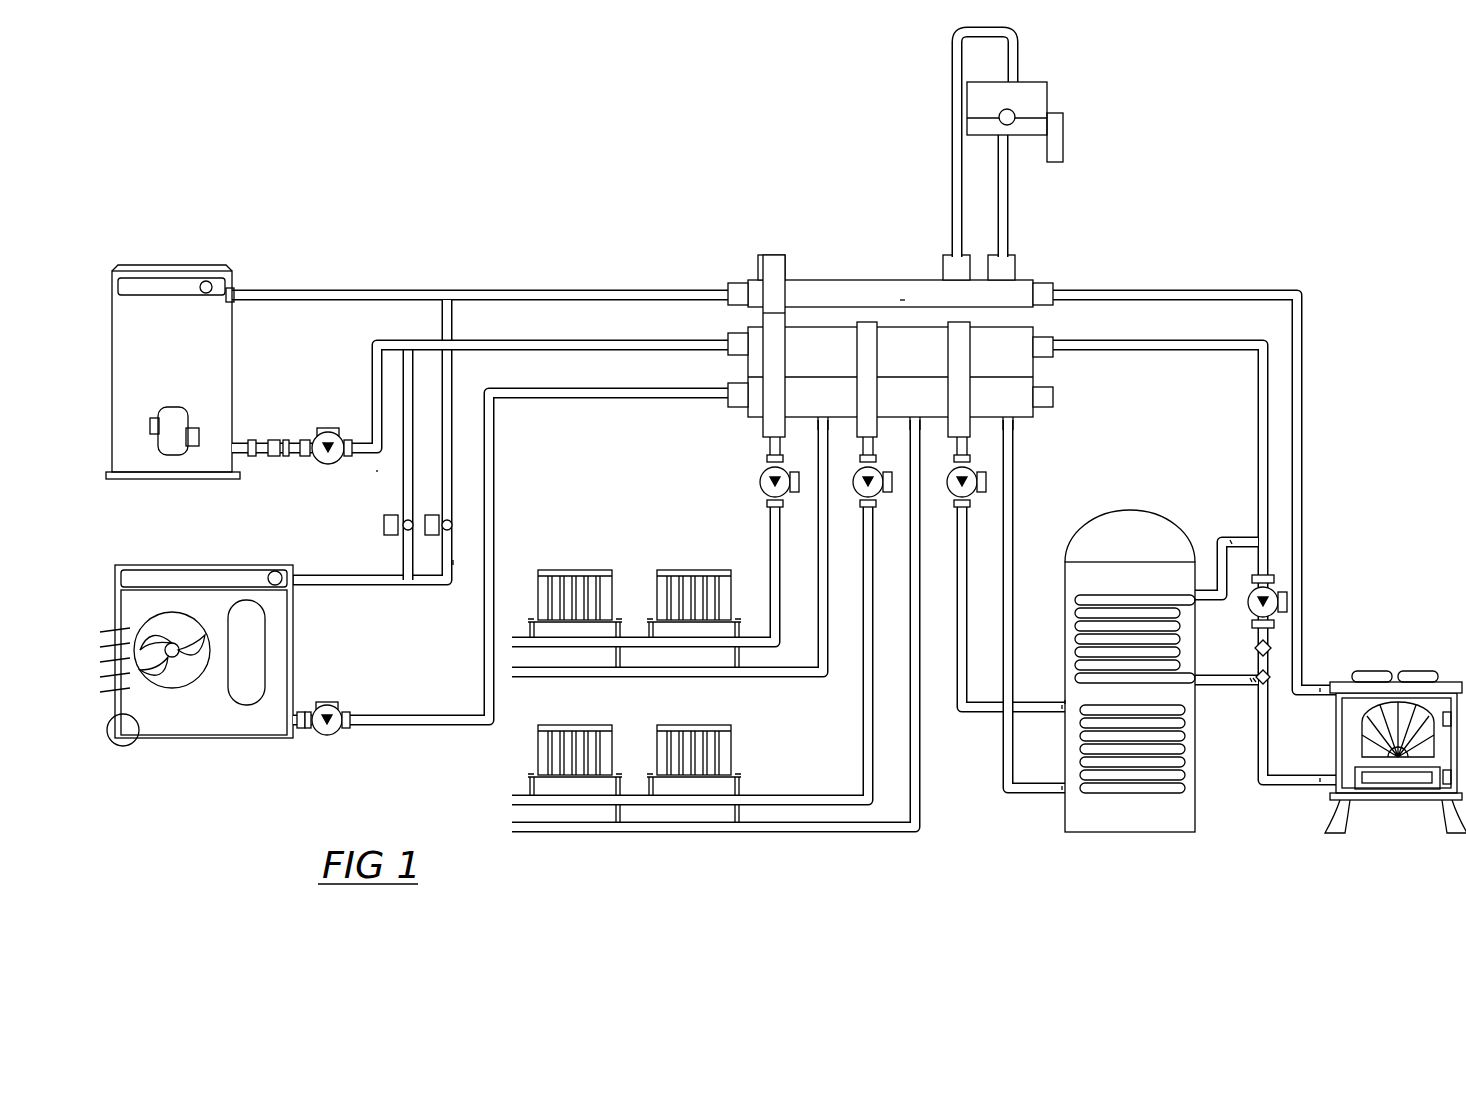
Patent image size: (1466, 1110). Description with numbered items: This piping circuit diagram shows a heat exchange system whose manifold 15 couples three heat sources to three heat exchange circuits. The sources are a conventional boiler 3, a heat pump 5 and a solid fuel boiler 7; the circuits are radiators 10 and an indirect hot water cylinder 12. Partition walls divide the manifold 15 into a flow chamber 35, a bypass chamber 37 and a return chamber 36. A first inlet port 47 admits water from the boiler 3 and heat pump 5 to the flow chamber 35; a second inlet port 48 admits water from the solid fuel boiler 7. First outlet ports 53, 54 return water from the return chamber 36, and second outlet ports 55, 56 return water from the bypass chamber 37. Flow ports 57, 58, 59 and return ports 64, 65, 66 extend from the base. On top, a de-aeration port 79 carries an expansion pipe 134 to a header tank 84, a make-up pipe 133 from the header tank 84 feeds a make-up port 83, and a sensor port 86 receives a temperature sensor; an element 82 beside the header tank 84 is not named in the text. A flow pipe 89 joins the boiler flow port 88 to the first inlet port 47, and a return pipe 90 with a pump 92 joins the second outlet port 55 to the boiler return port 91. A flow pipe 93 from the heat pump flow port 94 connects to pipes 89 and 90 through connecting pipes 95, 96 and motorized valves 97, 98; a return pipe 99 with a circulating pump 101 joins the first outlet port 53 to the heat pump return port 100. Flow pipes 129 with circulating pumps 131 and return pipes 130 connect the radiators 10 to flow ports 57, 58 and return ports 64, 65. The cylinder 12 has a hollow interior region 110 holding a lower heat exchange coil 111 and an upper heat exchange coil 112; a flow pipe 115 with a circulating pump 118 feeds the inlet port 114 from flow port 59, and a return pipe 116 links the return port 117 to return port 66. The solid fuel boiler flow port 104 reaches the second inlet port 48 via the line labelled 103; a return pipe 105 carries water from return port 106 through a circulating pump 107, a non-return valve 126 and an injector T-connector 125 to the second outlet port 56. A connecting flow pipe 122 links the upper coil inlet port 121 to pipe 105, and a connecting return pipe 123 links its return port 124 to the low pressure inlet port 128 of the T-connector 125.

The oil boiler 3 is at (188, 265).
The heat pump 5 is at (170, 565).
The wood stove 7 is at (1380, 672).
The radiator 10 is at (572, 574).
The hot water storage tank 12 is at (1120, 826).
The manifold 15 is at (845, 280).
The upper manifold body 35 is at (878, 282).
The lower manifold chamber 36 is at (832, 406).
The upper manifold chamber 37 is at (832, 364).
The left manifold port 47 is at (735, 280).
The right manifold port 48 is at (1050, 282).
The lower left port 53 is at (740, 400).
The lower right port 54 is at (1050, 400).
The middle left port 55 is at (726, 336).
The middle right port 56 is at (1050, 350).
The first valve 57 is at (762, 432).
The second valve 58 is at (860, 435).
The third valve 59 is at (962, 435).
The first outlet 64 is at (812, 420).
The second outlet 65 is at (905, 422).
The third outlet 66 is at (1016, 424).
The top port 79 is at (950, 255).
The expansion tank 82 is at (1015, 116).
The top port 83 is at (1005, 260).
The float switch 84 is at (1042, 137).
The top port 86 is at (770, 255).
The boiler outlet 88 is at (236, 286).
The boiler supply pipe 89 is at (340, 292).
The boiler return pipe 90 is at (560, 342).
The boiler inlet fitting 91 is at (240, 440).
The boiler pump 92 is at (328, 466).
The heat pump pipe 93 is at (400, 582).
The heat pump outlet 94 is at (296, 586).
The bypass pipe 95 is at (455, 380).
The pipe 96 is at (398, 452).
The pipe junction 97 is at (456, 522).
The check valve 98 is at (384, 528).
The heat pump return pipe 99 is at (483, 650).
The heat pump inlet 100 is at (300, 735).
The heat pump pump 101 is at (338, 728).
The stove supply pipe 103 is at (1135, 290).
The stove inlet 104 is at (1322, 688).
The stove return pipe 105 is at (1140, 350).
The stove outlet 106 is at (1330, 776).
The stove pump 107 is at (1272, 595).
The tank wall 110 is at (1085, 835).
The lower heat exchanger coil 111 is at (1148, 790).
The upper heat exchanger coil 112 is at (1118, 598).
The coil inlet 114 is at (1068, 698).
The tank supply pipe 115 is at (970, 716).
The tank return pipe 116 is at (1001, 792).
The coil outlet 117 is at (1062, 794).
The tank pump 118 is at (952, 492).
The coil pipe 121 is at (1212, 585).
The pipe bend 122 is at (1232, 538).
The coil return pipe 123 is at (1228, 688).
The tee 124 is at (1225, 657).
The valve 125 is at (1272, 674).
The check valve 126 is at (1272, 646).
The tee fitting 128 is at (1255, 676).
The radiator supply pipe 129 is at (772, 630).
The radiator return pipe 130 is at (812, 676).
The zone pump 131 is at (760, 480).
The expansion pipe 133 is at (1008, 182).
The relief pipe 134 is at (950, 142).